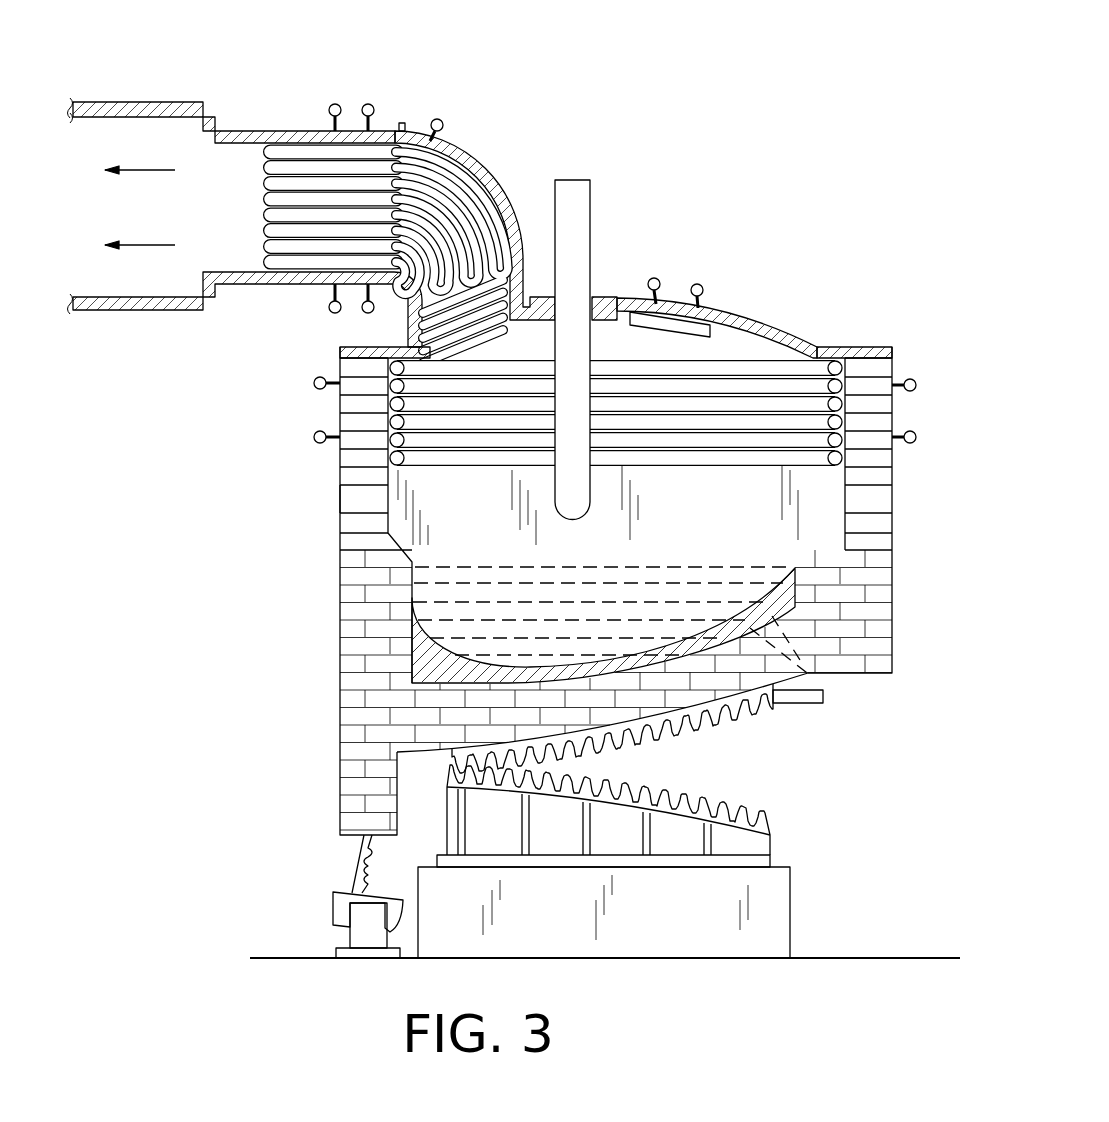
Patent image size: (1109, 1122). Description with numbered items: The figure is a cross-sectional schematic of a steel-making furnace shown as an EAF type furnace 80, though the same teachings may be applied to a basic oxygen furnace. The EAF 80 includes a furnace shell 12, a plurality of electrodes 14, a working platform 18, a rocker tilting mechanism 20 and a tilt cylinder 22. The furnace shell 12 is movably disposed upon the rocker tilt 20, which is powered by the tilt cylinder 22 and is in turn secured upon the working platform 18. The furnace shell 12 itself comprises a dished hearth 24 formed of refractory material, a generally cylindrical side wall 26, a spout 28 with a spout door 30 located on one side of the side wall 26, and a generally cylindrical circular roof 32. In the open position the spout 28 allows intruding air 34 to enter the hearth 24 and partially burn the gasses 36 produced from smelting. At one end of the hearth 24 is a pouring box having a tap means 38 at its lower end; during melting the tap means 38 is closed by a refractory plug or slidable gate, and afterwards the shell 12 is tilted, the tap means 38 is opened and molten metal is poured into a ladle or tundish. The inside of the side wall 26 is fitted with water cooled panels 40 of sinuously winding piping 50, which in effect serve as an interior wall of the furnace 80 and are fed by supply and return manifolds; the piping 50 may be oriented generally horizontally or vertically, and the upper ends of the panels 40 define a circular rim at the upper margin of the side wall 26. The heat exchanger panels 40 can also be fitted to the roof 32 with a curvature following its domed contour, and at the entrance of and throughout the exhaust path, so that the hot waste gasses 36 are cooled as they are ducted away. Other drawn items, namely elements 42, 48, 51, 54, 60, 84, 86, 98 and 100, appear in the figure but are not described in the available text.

The furnace shell 12 is at (900, 392).
The electrodes 14 is at (570, 180).
The working platform 18 is at (793, 890).
The rocker tilting mechanism 20 is at (725, 823).
The tilt cylinder 22 is at (355, 860).
The dished hearth 24 is at (385, 725).
The cylindrical side wall 26 is at (893, 420).
The spout 28 is at (340, 495).
The spout door 30 is at (348, 483).
The roof 32 is at (745, 313).
The intruding air 34 is at (348, 513).
The hot waste gasses 36 is at (150, 170).
The tap means 38 is at (805, 704).
The water cooled panels 40 is at (698, 430).
The roof block 42 is at (604, 300).
The inlet duct 48 is at (118, 311).
The sinuously winding piping 50 is at (836, 361).
The shield plate 51 is at (676, 312).
The sensor port 54 is at (402, 123).
The bend coil 60 is at (508, 276).
The EAF type furnace 80 is at (741, 125).
The inlet ports 84 is at (365, 104).
The outlet ports 86 is at (329, 110).
The molten metal 98 is at (420, 598).
The crucible 100 is at (430, 660).